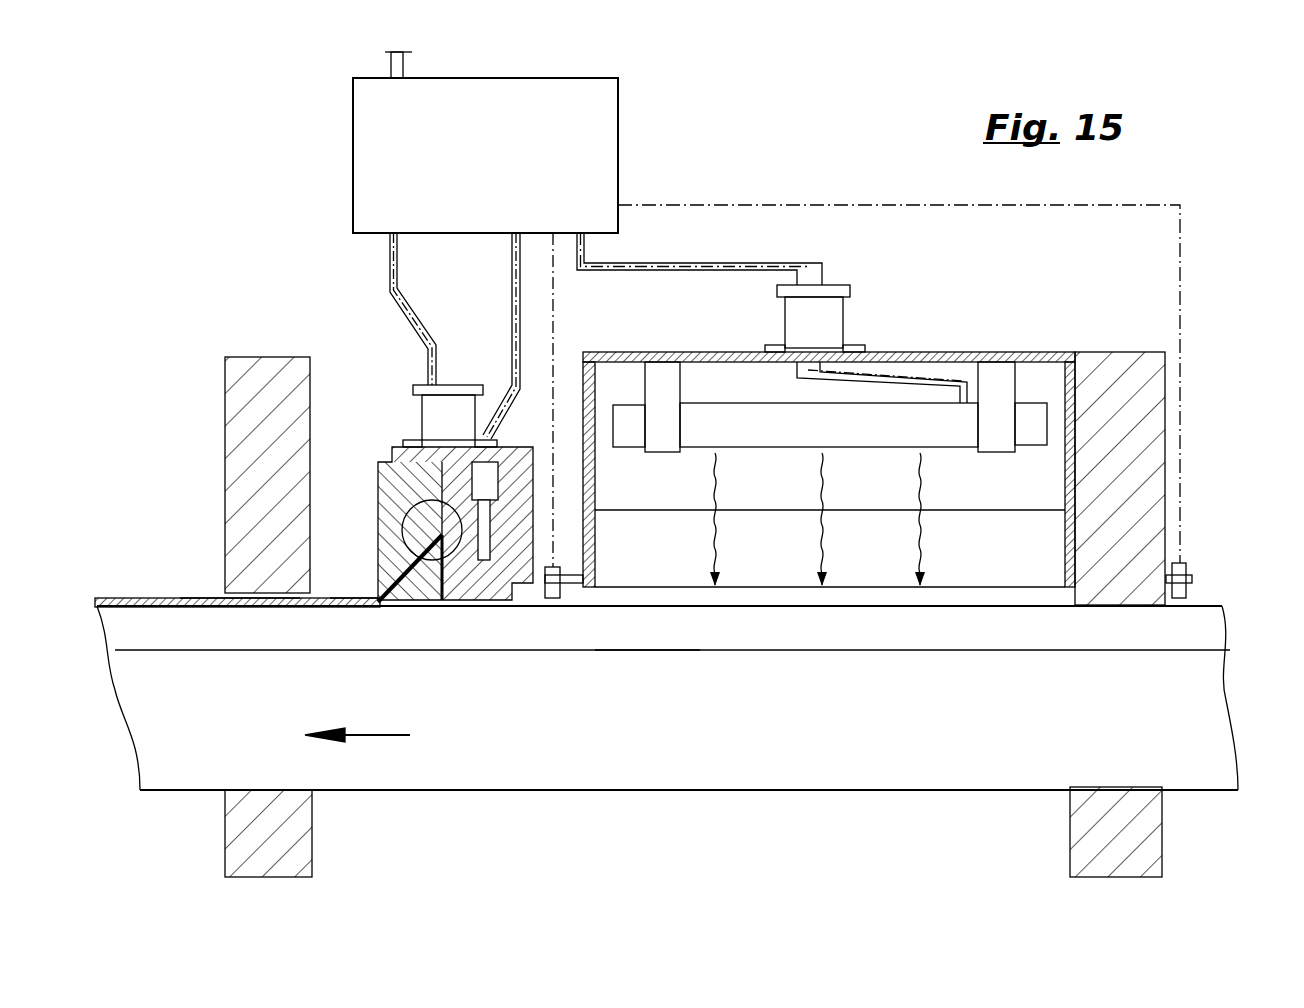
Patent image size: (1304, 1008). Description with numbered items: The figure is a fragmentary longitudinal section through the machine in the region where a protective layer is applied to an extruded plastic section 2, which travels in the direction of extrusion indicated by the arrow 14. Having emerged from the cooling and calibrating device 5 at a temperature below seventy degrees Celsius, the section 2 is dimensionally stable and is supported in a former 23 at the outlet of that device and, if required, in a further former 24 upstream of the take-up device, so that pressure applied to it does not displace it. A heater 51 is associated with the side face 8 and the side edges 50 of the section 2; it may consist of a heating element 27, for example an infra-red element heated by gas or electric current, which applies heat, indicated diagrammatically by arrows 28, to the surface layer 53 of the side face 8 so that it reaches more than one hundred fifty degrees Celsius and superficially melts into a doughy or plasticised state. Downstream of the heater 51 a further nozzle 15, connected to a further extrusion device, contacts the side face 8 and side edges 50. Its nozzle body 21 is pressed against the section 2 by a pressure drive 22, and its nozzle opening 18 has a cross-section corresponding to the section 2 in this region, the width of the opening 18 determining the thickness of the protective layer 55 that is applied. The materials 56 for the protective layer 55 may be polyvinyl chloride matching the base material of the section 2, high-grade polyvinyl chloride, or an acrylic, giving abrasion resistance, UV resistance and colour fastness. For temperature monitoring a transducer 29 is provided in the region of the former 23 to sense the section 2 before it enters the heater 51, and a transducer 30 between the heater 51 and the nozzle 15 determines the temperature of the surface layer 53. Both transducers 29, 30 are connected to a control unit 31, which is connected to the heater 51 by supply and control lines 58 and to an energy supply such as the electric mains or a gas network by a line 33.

The section 2 is at (1190, 689).
The cooling and calibrating device 5 is at (291, 216).
The side face 8 is at (695, 602).
The arrow 14 is at (375, 742).
The further nozzle 15 is at (488, 618).
The nozzle opening 18 is at (376, 596).
The nozzle body 21 is at (386, 496).
The pressure drive 22 is at (437, 432).
The former 23 is at (1080, 833).
The former 24 is at (237, 830).
The heating element 27 is at (781, 426).
The arrows 28 is at (828, 552).
The transducer 29 is at (1186, 567).
The transducer 30 is at (553, 600).
The control unit 31 is at (518, 101).
The line 33 is at (391, 62).
The side edges 50 is at (398, 613).
The heater 51 is at (900, 240).
The surface layer 53 is at (637, 617).
The protective layer 55 is at (200, 596).
The materials 56 is at (178, 598).
The supply and control lines 58 is at (672, 262).